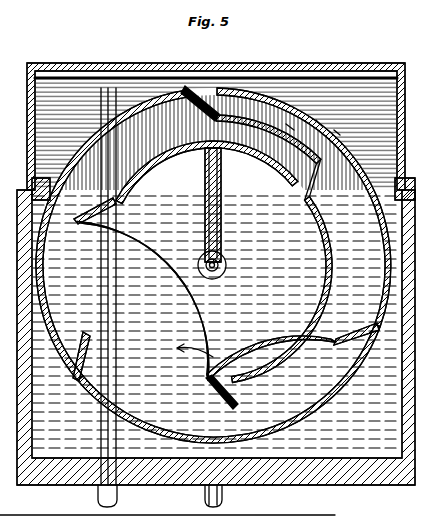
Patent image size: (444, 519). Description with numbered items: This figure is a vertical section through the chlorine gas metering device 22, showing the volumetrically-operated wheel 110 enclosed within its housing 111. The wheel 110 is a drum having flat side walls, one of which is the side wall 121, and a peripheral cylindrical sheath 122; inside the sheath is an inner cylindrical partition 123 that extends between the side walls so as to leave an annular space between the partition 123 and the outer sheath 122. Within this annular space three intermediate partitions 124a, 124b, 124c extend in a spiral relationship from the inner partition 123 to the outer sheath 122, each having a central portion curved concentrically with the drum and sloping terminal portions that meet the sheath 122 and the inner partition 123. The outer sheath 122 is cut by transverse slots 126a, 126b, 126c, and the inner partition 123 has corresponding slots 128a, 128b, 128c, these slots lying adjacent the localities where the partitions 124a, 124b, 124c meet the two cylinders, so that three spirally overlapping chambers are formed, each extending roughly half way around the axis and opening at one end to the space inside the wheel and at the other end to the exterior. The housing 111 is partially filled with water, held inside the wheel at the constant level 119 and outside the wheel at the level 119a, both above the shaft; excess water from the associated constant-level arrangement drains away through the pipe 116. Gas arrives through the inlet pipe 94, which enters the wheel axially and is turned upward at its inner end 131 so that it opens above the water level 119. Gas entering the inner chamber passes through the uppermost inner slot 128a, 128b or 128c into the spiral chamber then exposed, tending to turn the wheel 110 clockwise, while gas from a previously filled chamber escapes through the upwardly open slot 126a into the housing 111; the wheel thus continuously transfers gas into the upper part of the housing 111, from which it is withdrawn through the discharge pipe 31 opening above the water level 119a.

The metering device 22 is at (364, 66).
The housing 111 is at (68, 50).
The side wall 121 is at (172, 90).
The water level outside the wheel 119a is at (50, 176).
The intermediate partition 124a is at (245, 105).
The intermediate partition 124b is at (300, 410).
The intermediate partition 124c is at (33, 303).
The slot in outer sheath 126a is at (203, 84).
The slot in outer sheath 126b is at (377, 346).
The slot in outer sheath 126c is at (76, 370).
The slot in inner partition 128a is at (283, 249).
The slot in inner partition 128b is at (224, 380).
The slot in inner partition 128c is at (114, 227).
The water level 119 is at (183, 195).
The upturned inner end of inlet pipe 131 is at (222, 184).
The inner cylindrical partition 123 is at (290, 126).
The wheel 110 is at (318, 122).
The peripheral cylindrical sheath 122 is at (336, 132).
The discharge pipe 31 is at (118, 499).
The drain pipe 116 is at (224, 501).
The gas inlet pipe 94 is at (30, 500).